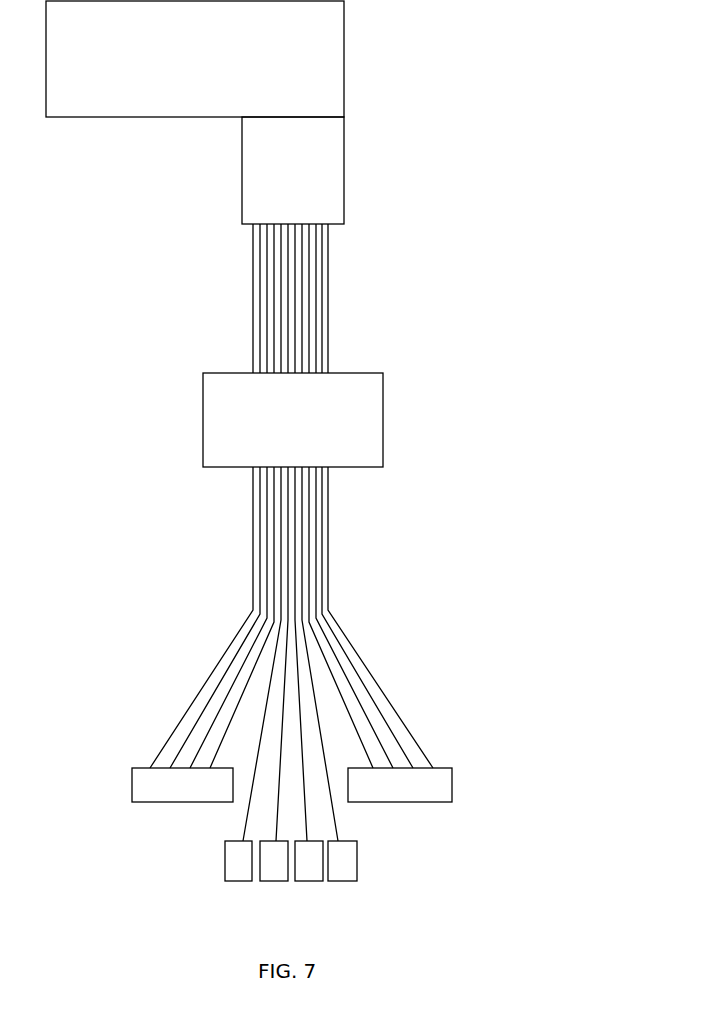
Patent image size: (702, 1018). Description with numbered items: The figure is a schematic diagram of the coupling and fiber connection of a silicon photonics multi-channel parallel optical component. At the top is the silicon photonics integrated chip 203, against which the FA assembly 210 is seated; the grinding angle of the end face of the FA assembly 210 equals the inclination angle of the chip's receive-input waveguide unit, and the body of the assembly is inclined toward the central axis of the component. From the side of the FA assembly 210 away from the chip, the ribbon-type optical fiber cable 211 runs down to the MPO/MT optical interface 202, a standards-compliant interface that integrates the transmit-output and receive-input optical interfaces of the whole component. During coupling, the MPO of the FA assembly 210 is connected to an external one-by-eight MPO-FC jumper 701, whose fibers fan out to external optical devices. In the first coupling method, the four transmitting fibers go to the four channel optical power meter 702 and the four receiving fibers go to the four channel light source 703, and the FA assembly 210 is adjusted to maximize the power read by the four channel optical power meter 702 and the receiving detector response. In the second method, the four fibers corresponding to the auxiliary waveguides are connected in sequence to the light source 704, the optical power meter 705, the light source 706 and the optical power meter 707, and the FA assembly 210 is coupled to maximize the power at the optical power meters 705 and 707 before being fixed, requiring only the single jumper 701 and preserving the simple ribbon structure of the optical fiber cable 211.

The silicon photonics integrated chip 203 is at (347, 72).
The FA assembly 210 is at (347, 182).
The optical fiber cable 211 is at (331, 303).
The MPO/MT optical interface 202 is at (386, 420).
The MPO-FC jumper 701 is at (331, 543).
The four channel optical power meter 702 is at (137, 767).
The four channel light source 703 is at (447, 767).
The light source 704 is at (225, 861).
The optical power meter 705 is at (275, 883).
The light source 706 is at (308, 883).
The optical power meter 707 is at (357, 861).